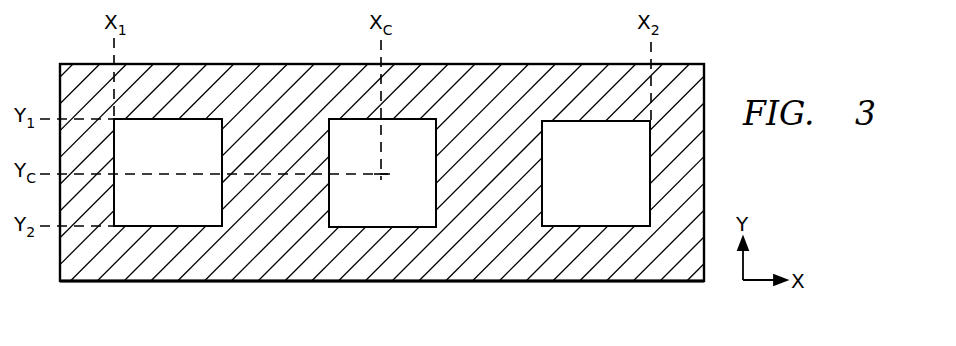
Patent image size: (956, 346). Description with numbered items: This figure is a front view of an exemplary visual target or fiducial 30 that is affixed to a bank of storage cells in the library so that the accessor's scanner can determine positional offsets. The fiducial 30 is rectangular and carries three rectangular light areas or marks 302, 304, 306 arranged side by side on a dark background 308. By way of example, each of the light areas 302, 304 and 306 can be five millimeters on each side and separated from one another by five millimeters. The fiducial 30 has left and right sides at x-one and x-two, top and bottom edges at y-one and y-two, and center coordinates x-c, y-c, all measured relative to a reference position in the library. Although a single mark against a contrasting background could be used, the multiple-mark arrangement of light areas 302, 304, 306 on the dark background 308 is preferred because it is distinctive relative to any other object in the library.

The fiducial 30 is at (246, 63).
The light area 302 is at (188, 212).
The light area 304 is at (402, 216).
The light area 306 is at (617, 185).
The dark background 308 is at (498, 82).